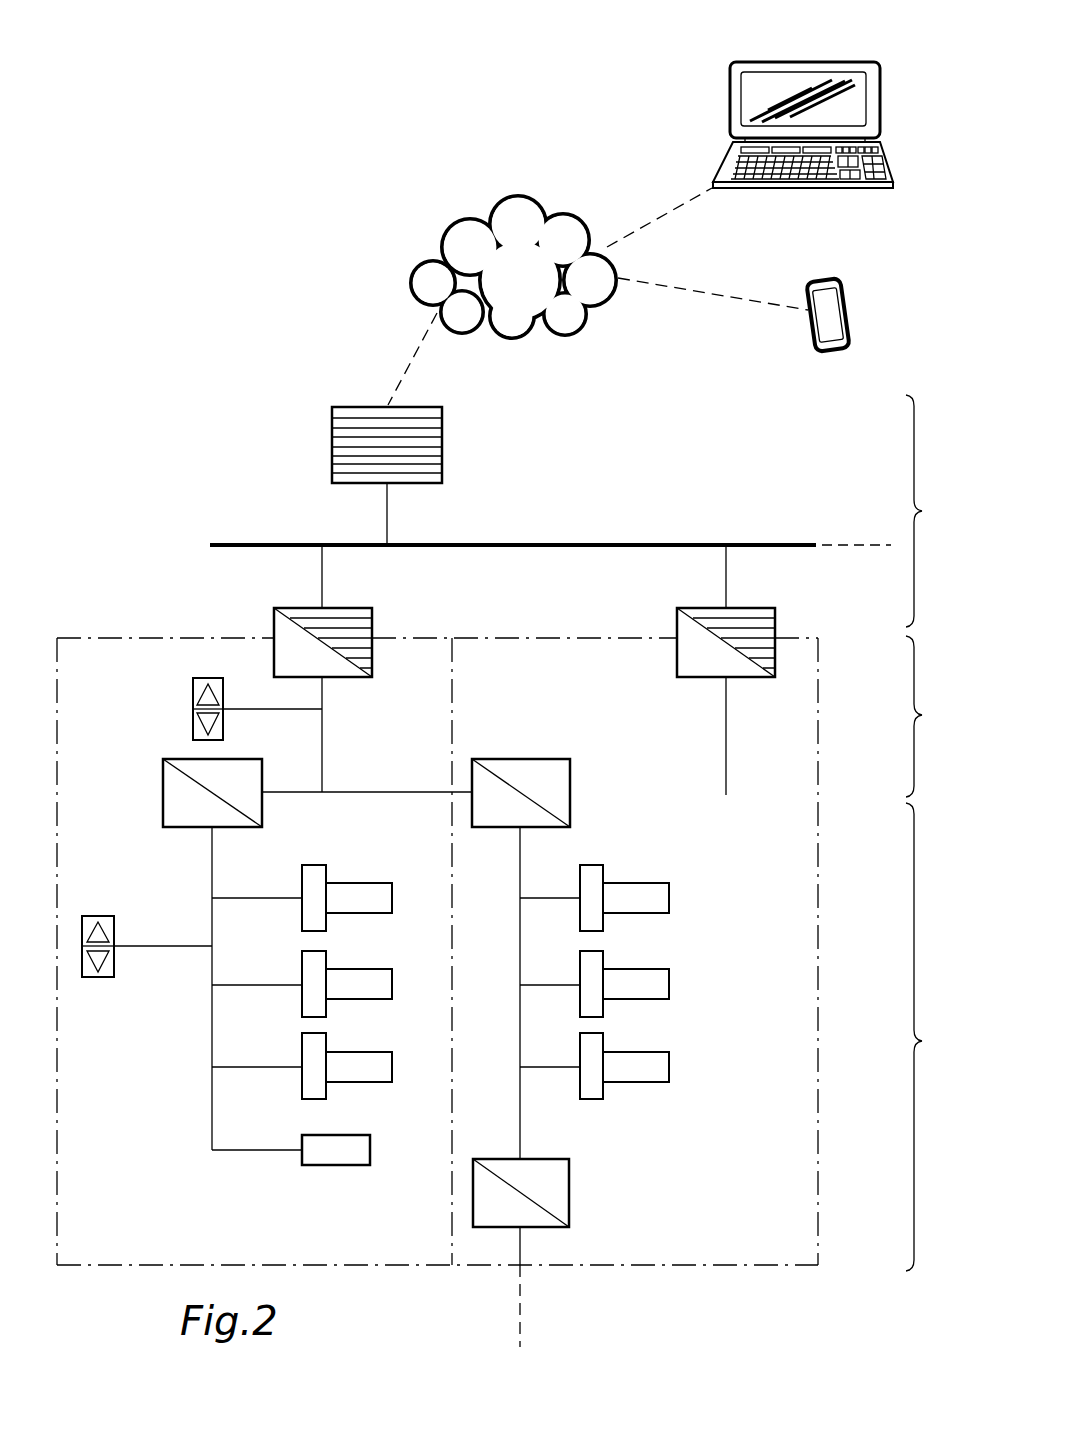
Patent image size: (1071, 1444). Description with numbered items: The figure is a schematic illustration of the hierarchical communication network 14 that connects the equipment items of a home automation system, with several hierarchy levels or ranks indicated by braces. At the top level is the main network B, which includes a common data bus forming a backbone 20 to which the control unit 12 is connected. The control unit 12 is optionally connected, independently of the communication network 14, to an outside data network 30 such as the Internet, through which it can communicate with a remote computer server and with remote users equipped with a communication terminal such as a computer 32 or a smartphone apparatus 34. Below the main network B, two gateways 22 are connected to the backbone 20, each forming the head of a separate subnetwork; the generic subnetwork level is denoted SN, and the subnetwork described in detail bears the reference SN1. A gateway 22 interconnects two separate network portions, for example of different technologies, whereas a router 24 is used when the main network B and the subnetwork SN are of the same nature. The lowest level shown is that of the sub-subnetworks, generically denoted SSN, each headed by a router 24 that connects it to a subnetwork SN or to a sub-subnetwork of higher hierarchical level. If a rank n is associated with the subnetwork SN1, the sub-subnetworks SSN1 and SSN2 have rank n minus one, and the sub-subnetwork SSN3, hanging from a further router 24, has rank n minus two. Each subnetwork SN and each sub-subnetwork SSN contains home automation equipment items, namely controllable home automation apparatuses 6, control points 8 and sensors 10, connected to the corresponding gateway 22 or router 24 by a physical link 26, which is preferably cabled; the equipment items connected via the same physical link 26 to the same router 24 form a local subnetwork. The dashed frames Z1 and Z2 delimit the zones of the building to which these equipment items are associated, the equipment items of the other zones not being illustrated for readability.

The communication network 14 is at (292, 232).
The outside data network 30 is at (598, 296).
The computer 32 is at (886, 100).
The mobile device 34 is at (853, 313).
The control unit 12 is at (355, 434).
The backbone 20 is at (582, 542).
The gateway 22 is at (286, 662).
The router 24 is at (174, 804).
The physical link 26 is at (212, 1030).
The control point 8 is at (198, 678).
The controllable home automation apparatus 6 is at (382, 900).
The sensor 10 is at (360, 1152).
The subnetwork SN1 is at (390, 637).
The sub-subnetwork SSN1 is at (198, 1074).
The sub-subnetwork SSN2 is at (602, 832).
The sub-subnetwork SSN3 is at (583, 1224).
The zone 1 Z1 is at (86, 638).
The zone 2 Z2 is at (802, 638).
The main network B is at (925, 511).
The subnetwork SN is at (933, 716).
The sub-subnetwork SSN is at (940, 1037).